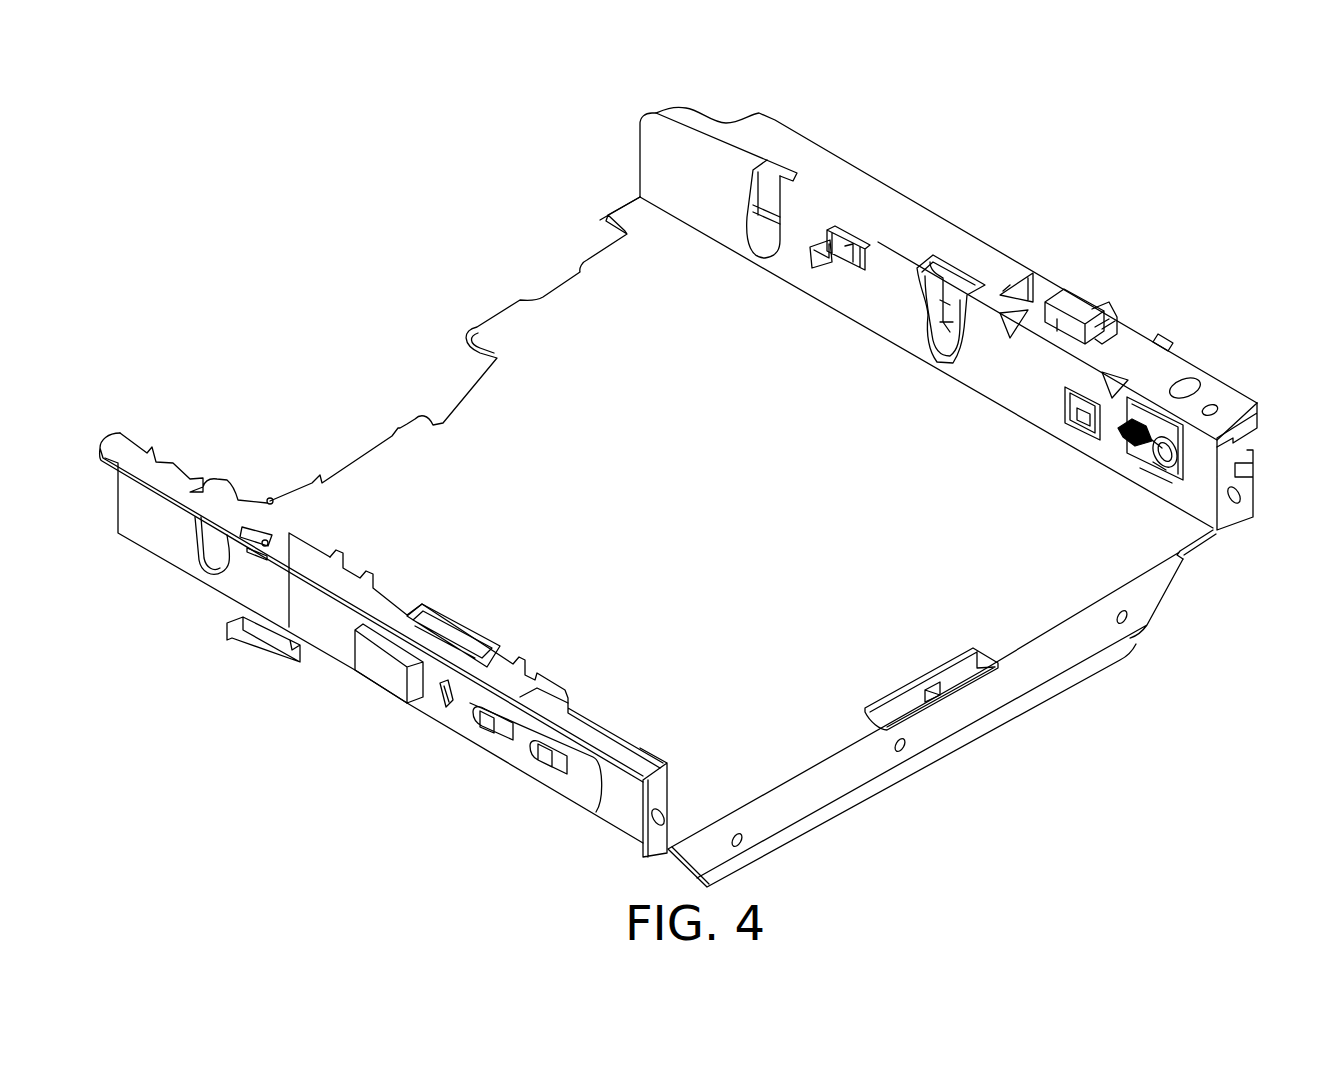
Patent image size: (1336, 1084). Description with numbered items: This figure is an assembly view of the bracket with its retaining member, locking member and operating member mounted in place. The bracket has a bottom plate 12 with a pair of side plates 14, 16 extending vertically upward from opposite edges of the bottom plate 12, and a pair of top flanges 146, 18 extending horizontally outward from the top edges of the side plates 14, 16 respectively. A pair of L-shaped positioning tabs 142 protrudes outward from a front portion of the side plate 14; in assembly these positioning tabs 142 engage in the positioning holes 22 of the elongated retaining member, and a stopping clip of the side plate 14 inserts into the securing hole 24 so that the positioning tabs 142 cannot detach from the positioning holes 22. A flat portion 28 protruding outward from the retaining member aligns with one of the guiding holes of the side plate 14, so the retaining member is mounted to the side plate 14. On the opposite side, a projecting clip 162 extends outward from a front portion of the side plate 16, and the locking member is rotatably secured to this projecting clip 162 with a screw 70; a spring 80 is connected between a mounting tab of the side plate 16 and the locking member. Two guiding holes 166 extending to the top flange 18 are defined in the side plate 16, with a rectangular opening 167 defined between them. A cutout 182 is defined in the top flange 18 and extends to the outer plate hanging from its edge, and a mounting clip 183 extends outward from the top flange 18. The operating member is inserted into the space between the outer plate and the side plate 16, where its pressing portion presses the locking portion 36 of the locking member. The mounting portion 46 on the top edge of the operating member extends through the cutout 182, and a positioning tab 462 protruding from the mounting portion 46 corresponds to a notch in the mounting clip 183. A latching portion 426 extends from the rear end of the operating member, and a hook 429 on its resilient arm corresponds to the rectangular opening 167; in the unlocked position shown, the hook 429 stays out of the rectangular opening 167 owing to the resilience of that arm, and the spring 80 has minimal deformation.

The bottom plate 12 is at (517, 345).
The side plate 14 is at (617, 790).
The side plate 16 is at (1200, 494).
The top flange 18 is at (797, 153).
The positioning holes 22 is at (557, 764).
The securing hole 24 is at (443, 700).
The flat portion 28 is at (388, 673).
The locking portion 36 is at (1090, 405).
The mounting portion 46 is at (1098, 302).
The screw 70 is at (1230, 428).
The spring 80 is at (1190, 388).
The positioning tabs 142 is at (520, 742).
The top flange 146 is at (123, 455).
The projecting clip 162 is at (1150, 462).
The guiding holes 166 is at (1018, 283).
The rectangular opening 167 is at (836, 225).
The cutout 182 is at (1045, 297).
The mounting clip 183 is at (1162, 340).
The latching portion 426 is at (937, 265).
The hook 429 is at (821, 254).
The positioning tab 462 is at (1100, 305).